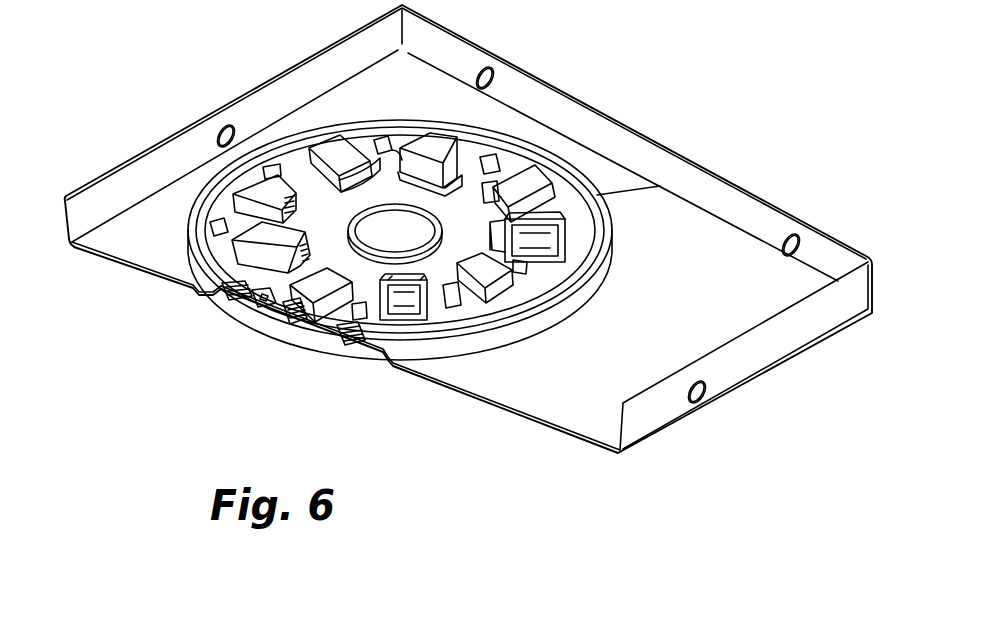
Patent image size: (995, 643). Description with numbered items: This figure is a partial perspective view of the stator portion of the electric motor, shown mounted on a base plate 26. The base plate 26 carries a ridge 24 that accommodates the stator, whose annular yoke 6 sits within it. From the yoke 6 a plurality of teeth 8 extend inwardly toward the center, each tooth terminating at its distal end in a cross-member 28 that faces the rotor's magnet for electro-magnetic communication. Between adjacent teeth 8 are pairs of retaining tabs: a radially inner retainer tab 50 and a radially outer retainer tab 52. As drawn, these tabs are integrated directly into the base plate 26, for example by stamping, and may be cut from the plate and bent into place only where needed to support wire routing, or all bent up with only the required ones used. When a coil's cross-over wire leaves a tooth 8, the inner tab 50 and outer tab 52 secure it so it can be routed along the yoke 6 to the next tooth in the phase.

The yoke 6 is at (218, 254).
The teeth 8 is at (537, 231).
The ridge 24 is at (593, 220).
The base plate 26 is at (340, 107).
The cross-member 28 is at (362, 211).
The inner retainer tab 50 is at (351, 197).
The outer retainer tab 52 is at (385, 140).